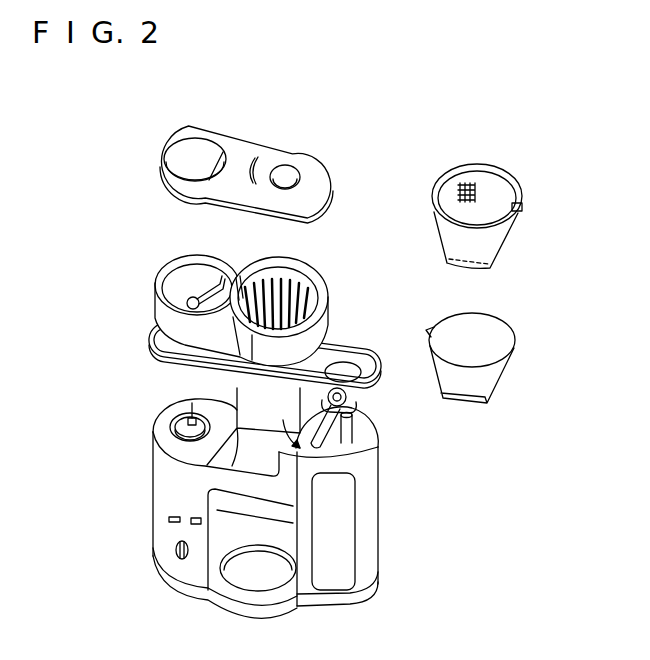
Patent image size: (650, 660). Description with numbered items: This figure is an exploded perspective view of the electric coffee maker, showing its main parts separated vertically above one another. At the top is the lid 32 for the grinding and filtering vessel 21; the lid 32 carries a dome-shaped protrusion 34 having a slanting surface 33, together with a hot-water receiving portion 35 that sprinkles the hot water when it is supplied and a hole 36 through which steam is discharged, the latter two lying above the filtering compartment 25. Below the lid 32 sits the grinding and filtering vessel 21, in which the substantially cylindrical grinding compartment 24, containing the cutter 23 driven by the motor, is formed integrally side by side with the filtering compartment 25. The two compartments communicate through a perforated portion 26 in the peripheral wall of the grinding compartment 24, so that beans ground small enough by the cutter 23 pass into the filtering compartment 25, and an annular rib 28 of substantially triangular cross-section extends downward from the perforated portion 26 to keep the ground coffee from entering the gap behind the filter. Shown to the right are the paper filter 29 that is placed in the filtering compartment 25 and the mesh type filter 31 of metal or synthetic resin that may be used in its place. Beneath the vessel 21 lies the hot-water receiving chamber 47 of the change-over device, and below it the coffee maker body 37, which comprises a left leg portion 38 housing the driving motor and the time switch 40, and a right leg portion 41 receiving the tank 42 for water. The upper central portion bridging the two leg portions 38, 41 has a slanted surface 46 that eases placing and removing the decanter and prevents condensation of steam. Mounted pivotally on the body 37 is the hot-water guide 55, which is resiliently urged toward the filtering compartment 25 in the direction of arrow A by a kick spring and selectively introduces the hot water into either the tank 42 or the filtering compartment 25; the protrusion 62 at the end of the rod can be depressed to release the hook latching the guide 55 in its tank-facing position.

The grinding and filtering vessel 21 is at (163, 265).
The cutter 23 is at (213, 282).
The grinding compartment 24 is at (185, 285).
The filtering compartment 25 is at (270, 317).
The perforated portion 26 is at (235, 287).
The annular rib 28 is at (277, 282).
The paper filter 29 is at (493, 327).
The mesh type filter 31 is at (500, 172).
The lid 32 is at (255, 138).
The slanting surface 33 is at (220, 162).
The dome-shaped protrusion 34 is at (185, 147).
The hot-water receiving portion 35 is at (287, 178).
The hole 36 is at (263, 162).
The coffee maker body 37 is at (157, 430).
The left leg portion 38 is at (162, 502).
The time switch 40 is at (177, 552).
The right leg portion 41 is at (365, 533).
The tank 42 is at (343, 548).
The slanted surface 46 is at (252, 452).
The hot-water receiving chamber 47 is at (340, 387).
The hot-water guide 55 is at (330, 437).
The protrusion 62 is at (350, 405).
The arrow A is at (286, 421).